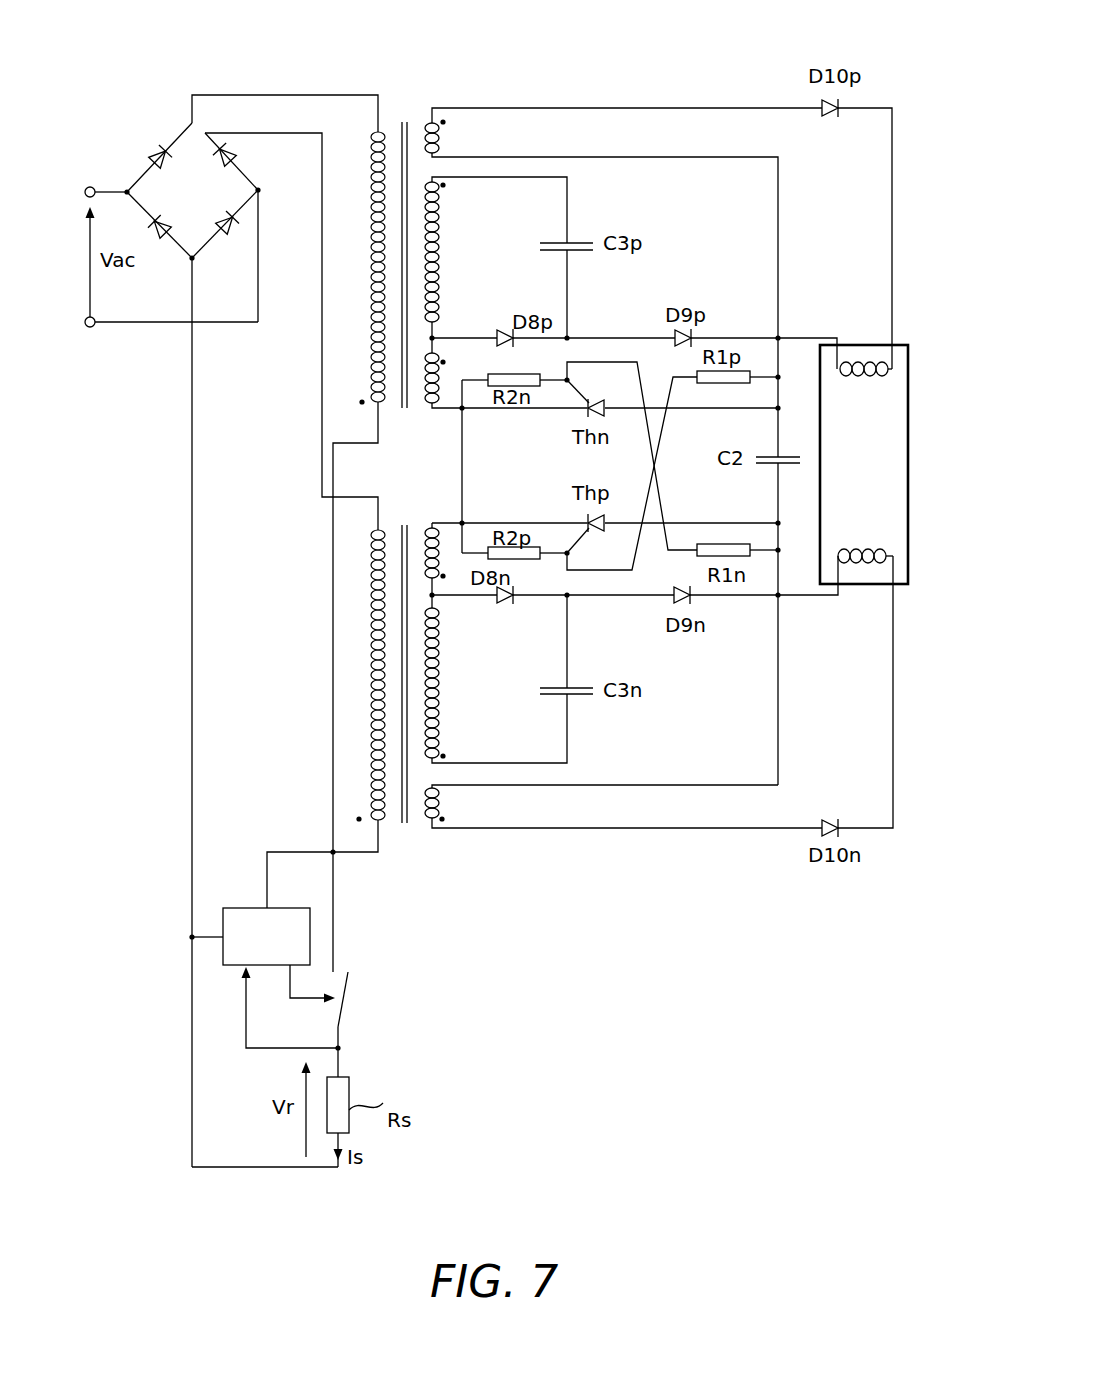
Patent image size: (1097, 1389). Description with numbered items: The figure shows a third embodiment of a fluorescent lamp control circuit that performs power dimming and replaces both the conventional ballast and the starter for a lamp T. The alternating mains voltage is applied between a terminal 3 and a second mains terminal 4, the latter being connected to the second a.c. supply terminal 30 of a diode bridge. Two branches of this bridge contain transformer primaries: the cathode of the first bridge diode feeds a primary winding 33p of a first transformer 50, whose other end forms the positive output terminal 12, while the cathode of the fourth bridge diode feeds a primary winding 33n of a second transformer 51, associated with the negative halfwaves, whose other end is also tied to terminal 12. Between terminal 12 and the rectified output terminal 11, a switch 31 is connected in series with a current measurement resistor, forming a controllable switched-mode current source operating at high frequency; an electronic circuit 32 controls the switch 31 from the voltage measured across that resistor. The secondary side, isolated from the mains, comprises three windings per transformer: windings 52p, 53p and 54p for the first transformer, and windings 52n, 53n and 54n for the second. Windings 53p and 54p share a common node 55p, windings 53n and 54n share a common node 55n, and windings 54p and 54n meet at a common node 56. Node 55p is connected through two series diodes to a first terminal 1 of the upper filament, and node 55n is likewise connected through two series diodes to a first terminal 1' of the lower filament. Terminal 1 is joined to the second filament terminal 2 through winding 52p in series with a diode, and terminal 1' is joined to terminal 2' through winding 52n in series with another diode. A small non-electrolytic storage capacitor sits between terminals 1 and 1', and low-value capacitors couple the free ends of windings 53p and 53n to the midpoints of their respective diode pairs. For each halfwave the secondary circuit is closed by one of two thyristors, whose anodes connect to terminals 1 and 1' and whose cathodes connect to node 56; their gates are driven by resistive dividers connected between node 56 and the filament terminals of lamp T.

The a.c. supply terminal 3 is at (90, 186).
The second terminal of the mains power supply 4 is at (92, 328).
The rectified output terminal 11 is at (194, 260).
The second a.c. supply terminal 30 is at (260, 192).
The primary winding of first transformer 33p is at (378, 127).
The primary winding of second transformer 33n is at (371, 620).
The first transformer 50 is at (400, 103).
The second transformer 51 is at (406, 830).
The positive output terminal 12 is at (335, 854).
The electronic circuit 32 is at (245, 906).
The switch 31 is at (364, 984).
The secondary winding 52p is at (437, 143).
The secondary winding 53p is at (440, 250).
The common node 55p is at (440, 337).
The secondary winding 54p is at (438, 378).
The common node 56 is at (462, 458).
The secondary winding 54n is at (438, 593).
The common node 55n is at (434, 600).
The secondary winding 53n is at (443, 697).
The secondary winding 52n is at (445, 812).
The first terminal of filament 1 is at (835, 333).
The second terminal of filament 2 is at (887, 238).
The first terminal of filament 1' is at (835, 602).
The second terminal of filament 2' is at (888, 692).
The lamp T is at (910, 465).